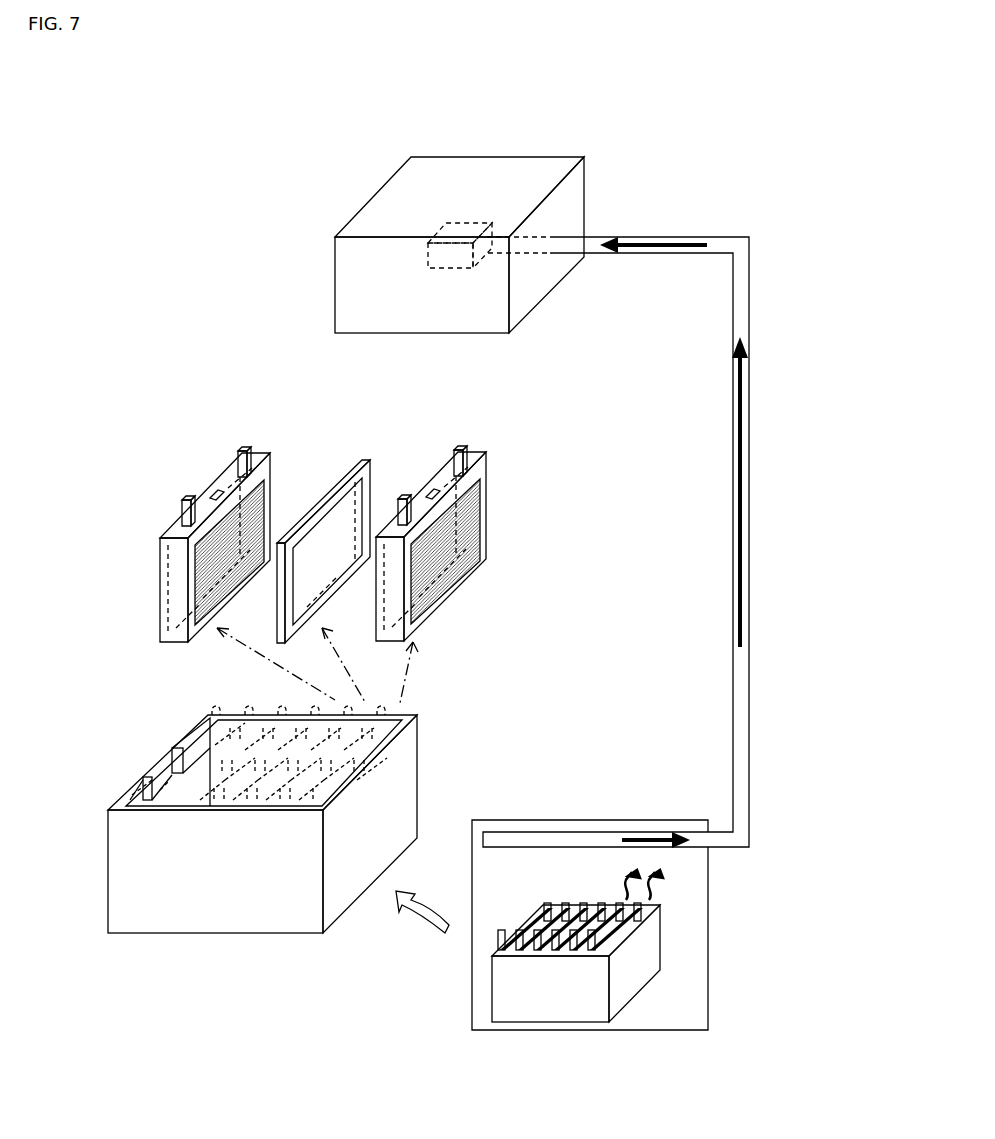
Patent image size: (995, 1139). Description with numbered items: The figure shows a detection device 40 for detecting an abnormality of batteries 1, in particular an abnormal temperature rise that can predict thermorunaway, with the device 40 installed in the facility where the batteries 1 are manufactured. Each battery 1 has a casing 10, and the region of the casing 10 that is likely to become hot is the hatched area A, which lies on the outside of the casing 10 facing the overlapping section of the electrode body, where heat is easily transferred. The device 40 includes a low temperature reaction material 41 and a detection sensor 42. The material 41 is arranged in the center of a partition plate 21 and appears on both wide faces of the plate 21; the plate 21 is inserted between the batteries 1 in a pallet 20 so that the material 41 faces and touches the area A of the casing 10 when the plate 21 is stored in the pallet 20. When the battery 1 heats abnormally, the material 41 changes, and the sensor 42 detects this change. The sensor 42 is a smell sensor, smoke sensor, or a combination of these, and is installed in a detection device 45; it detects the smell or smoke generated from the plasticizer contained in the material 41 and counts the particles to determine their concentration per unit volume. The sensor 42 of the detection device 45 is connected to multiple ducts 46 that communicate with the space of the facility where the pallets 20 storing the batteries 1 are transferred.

The device 40 is at (126, 123).
The detection device 45 is at (378, 204).
The detection sensor 42 is at (420, 255).
The ducts 46 is at (648, 832).
The pallet 20 is at (640, 966).
The battery 1 is at (335, 508).
The casing 10 is at (274, 477).
The area A is at (256, 500).
The partition plate 21 is at (350, 521).
The low temperature reaction material 41 is at (358, 497).